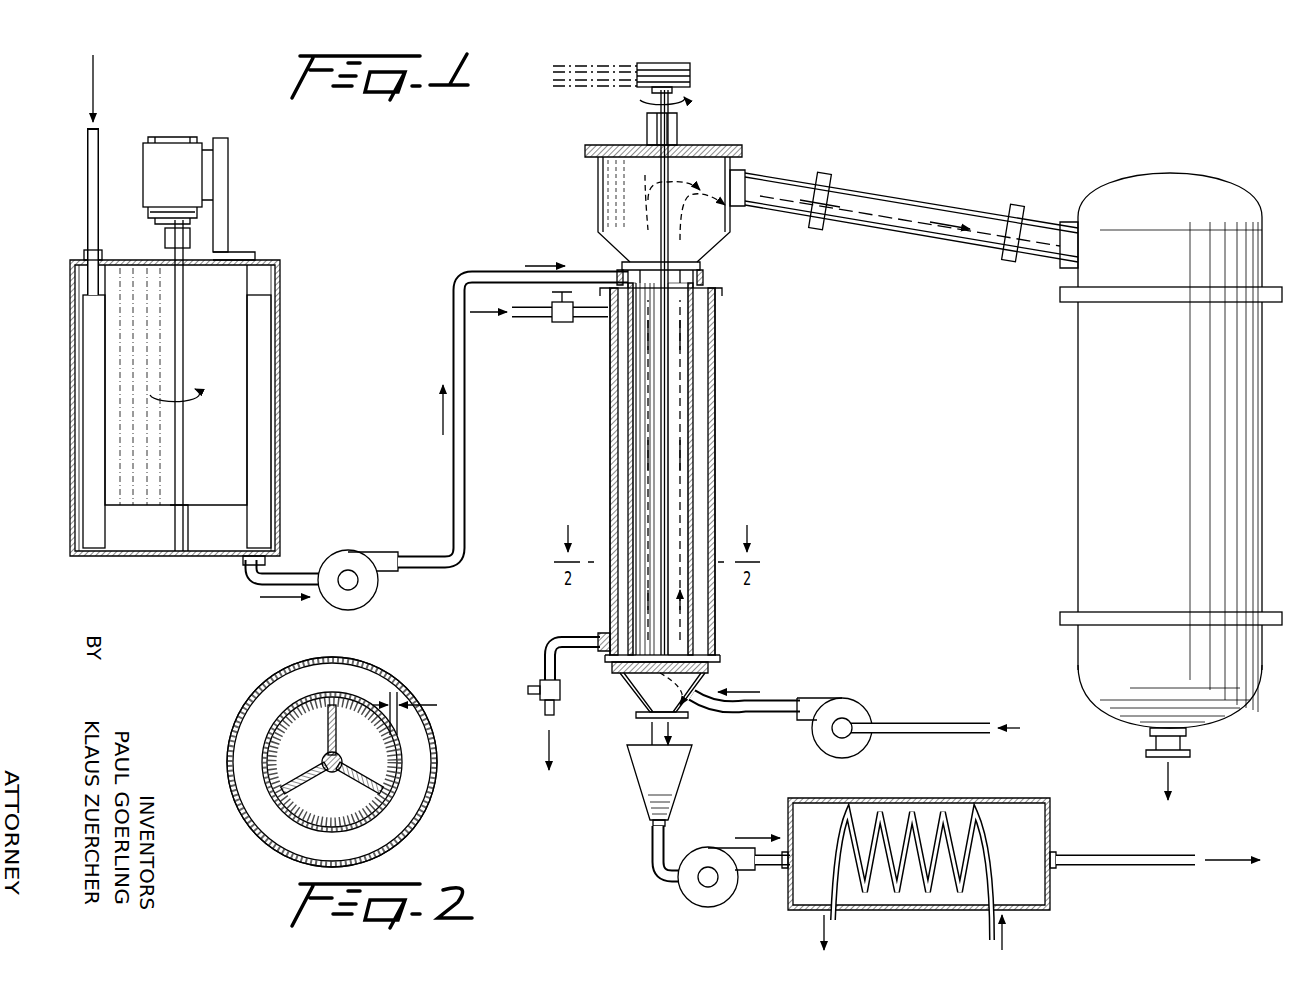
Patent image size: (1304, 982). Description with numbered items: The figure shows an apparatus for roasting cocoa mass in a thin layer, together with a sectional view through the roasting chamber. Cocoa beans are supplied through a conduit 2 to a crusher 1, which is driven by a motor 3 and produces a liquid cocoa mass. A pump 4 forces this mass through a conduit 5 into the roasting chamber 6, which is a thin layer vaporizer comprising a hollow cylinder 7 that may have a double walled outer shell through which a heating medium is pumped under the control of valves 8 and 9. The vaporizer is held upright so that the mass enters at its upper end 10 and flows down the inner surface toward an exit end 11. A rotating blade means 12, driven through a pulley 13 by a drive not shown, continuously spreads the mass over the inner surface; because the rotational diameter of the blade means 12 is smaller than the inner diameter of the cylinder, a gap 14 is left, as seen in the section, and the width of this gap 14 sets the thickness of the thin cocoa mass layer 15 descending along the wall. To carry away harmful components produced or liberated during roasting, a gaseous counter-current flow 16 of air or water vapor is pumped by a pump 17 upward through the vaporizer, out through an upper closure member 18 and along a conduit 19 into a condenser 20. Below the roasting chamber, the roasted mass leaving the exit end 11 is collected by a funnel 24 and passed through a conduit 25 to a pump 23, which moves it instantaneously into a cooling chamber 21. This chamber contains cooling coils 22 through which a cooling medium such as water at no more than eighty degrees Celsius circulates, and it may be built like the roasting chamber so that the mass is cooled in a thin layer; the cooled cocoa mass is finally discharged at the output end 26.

In FIG. 1, the crusher 1 is at (262, 282).
In FIG. 1, the conduit 2 is at (92, 170).
In FIG. 1, the motor 3 is at (190, 185).
In FIG. 1, the pump 4 is at (355, 560).
In FIG. 1, the conduit 5 is at (455, 348).
In FIG. 1, the roasting chamber 6 is at (725, 463).
In FIG. 2, the roasting chamber 6 is at (246, 850).
In FIG. 1, the hollow cylinder 7 is at (708, 345).
In FIG. 2, the hollow cylinder 7 is at (245, 722).
In FIG. 1, the valve 8 is at (557, 322).
In FIG. 1, the valve 9 is at (542, 680).
In FIG. 1, the upper end 10 is at (700, 283).
In FIG. 1, the exit end 11 is at (643, 690).
In FIG. 1, the blade means 12 is at (650, 408).
In FIG. 2, the blade means 12 is at (338, 712).
In FIG. 1, the pulley 13 is at (645, 66).
In FIG. 1, the gap 14 is at (630, 507).
In FIG. 2, the gap 14 is at (397, 702).
In FIG. 2, the thin cocoa mass layer 15 is at (292, 706).
In FIG. 1, the gaseous counter-current flow 16 is at (648, 467).
In FIG. 1, the pump 17 is at (843, 710).
In FIG. 1, the upper closure member 18 is at (615, 180).
In FIG. 1, the conduit 19 is at (890, 205).
In FIG. 1, the condenser 20 is at (1085, 460).
In FIG. 1, the cooling chamber 21 is at (1030, 840).
In FIG. 1, the cooling coils 22 is at (945, 825).
In FIG. 1, the pump 23 is at (710, 897).
In FIG. 1, the funnel 24 is at (655, 785).
In FIG. 1, the conduit 25 is at (650, 860).
In FIG. 1, the output end 26 is at (1172, 865).